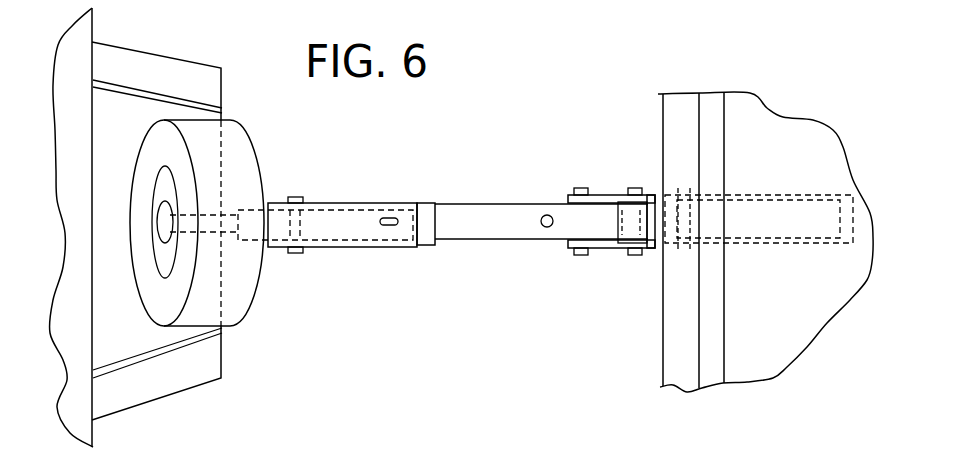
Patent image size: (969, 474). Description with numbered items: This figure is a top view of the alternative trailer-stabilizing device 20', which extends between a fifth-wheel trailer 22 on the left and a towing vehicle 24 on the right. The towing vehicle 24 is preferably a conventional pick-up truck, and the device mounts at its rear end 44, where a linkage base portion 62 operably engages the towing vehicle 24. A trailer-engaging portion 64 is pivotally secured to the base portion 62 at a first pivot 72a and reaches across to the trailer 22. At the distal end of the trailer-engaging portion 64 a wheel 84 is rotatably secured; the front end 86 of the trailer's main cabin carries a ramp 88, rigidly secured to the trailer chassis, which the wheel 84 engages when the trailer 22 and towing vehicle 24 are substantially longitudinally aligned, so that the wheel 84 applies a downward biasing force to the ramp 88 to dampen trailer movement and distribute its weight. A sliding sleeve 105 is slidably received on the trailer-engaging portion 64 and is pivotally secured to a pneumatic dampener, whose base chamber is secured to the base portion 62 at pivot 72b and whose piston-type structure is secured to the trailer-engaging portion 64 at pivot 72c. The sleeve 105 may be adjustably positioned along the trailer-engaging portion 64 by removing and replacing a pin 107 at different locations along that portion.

The fifth-wheel trailer 22 is at (65, 192).
The towing vehicle 24 is at (800, 309).
The rear end of the towing vehicle 44 is at (662, 323).
The base portion 62 is at (610, 253).
The trailer-engaging portion 64 is at (467, 203).
The first pivot 72a is at (637, 188).
The pivot 72b is at (291, 196).
The pivot 72c is at (578, 188).
The wheel 84 is at (248, 287).
The front end of the main cabin 86 is at (93, 115).
The ramp 88 is at (197, 100).
The sliding sleeve 105 is at (393, 248).
The pin 107 is at (386, 216).
The trailer-stabilizing device 20' is at (464, 210).